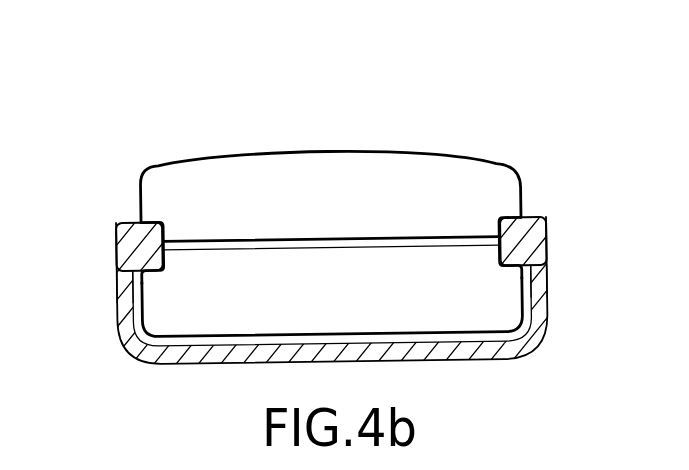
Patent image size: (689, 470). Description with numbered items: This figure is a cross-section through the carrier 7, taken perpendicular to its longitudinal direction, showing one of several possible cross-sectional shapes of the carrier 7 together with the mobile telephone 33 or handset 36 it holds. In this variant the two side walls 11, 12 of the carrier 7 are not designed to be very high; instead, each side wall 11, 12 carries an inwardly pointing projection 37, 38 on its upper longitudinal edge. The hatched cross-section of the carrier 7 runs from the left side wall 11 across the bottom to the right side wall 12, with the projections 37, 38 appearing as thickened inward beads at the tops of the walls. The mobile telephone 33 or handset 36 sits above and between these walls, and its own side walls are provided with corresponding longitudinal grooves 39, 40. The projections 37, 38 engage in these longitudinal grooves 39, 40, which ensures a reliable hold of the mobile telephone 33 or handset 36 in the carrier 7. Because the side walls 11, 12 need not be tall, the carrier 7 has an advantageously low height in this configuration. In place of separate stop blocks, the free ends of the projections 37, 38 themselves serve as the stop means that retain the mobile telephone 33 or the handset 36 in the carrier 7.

The carrier 7 is at (124, 363).
The side wall 11 is at (125, 313).
The side wall 12 is at (537, 301).
The mobile telephone 33 is at (330, 176).
The handset 36 is at (342, 157).
The projection 37 is at (149, 234).
The projection 38 is at (511, 238).
The longitudinal groove 39 is at (165, 219).
The longitudinal groove 40 is at (499, 218).